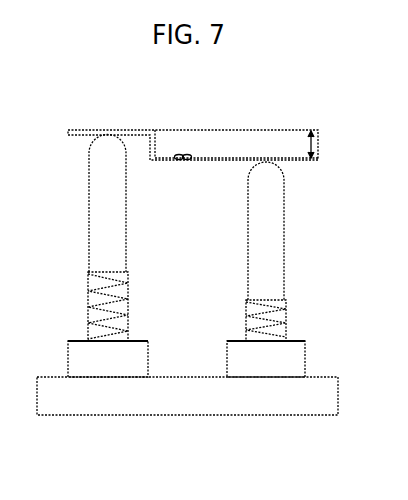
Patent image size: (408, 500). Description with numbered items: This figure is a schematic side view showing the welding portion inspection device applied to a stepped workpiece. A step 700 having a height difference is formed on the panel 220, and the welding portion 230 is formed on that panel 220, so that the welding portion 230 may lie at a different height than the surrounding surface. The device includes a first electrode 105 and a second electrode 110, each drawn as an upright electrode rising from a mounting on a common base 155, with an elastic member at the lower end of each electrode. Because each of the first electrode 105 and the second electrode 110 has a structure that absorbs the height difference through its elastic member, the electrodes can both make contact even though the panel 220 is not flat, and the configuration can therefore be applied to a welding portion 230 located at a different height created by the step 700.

The first electrode 105 is at (90, 217).
The second electrode 110 is at (284, 220).
The base 155 is at (190, 415).
The panel 220 is at (246, 156).
The welding portion 230 is at (183, 154).
The step 700 is at (313, 148).